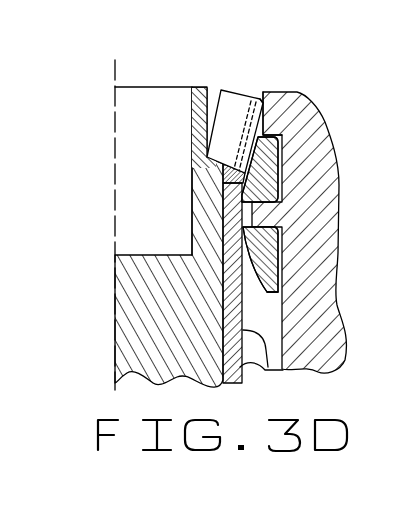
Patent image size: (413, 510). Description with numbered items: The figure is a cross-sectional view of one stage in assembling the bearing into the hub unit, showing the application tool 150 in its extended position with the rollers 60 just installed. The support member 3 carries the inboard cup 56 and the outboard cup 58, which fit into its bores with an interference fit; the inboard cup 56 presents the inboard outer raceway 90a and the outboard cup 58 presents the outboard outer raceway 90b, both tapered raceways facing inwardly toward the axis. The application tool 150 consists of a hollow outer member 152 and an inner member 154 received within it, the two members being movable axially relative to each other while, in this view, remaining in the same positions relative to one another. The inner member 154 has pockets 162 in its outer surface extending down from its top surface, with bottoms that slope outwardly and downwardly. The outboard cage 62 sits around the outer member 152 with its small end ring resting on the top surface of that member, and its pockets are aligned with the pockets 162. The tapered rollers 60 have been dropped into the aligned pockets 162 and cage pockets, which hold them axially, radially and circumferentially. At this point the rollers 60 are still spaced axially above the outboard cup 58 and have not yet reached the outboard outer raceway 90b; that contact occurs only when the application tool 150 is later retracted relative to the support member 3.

The support member 3 is at (352, 199).
The inboard cup 56 is at (278, 253).
The outboard cup 58 is at (332, 133).
The tapered rollers 60 is at (233, 100).
The outboard cage 62 is at (263, 82).
The inboard outer raceway 90a is at (278, 291).
The outboard outer raceway 90b is at (262, 120).
The application tool 150 is at (104, 317).
The outer member 152 is at (270, 367).
The inner member 154 is at (190, 100).
The pockets 162 is at (217, 87).